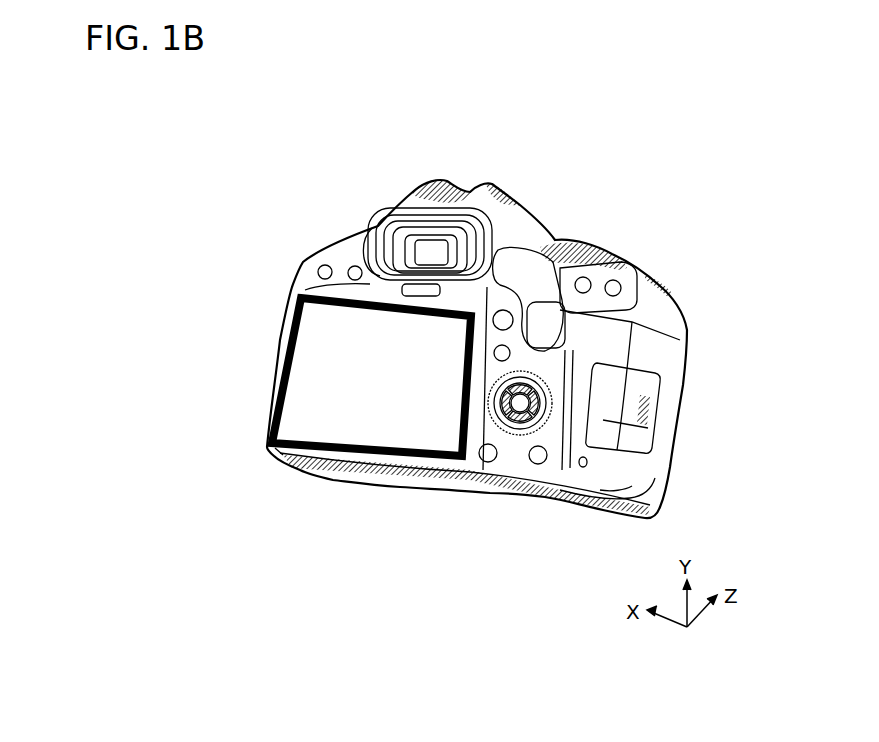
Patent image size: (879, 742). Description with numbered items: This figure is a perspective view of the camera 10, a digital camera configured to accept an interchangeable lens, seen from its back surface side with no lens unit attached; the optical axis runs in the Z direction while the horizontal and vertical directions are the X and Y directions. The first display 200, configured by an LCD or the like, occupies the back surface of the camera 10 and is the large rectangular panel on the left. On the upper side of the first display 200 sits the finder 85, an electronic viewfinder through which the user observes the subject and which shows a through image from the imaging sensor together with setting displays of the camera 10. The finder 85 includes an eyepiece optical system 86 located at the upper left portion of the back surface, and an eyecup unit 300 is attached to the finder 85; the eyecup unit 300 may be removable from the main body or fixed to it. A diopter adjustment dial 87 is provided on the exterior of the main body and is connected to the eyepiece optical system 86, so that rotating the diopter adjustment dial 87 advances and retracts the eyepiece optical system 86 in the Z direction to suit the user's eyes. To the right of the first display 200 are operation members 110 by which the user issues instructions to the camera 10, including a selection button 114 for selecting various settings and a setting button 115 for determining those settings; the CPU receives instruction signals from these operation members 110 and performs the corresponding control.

The camera 10 is at (704, 121).
The eyecup unit 300 is at (463, 223).
The finder 85 is at (432, 216).
The eyepiece optical system 86 is at (425, 262).
The diopter adjustment dial 87 is at (362, 240).
The first display 200 is at (335, 430).
The operation member 110 is at (590, 598).
The selection button 114 is at (538, 466).
The setting button 115 is at (488, 465).